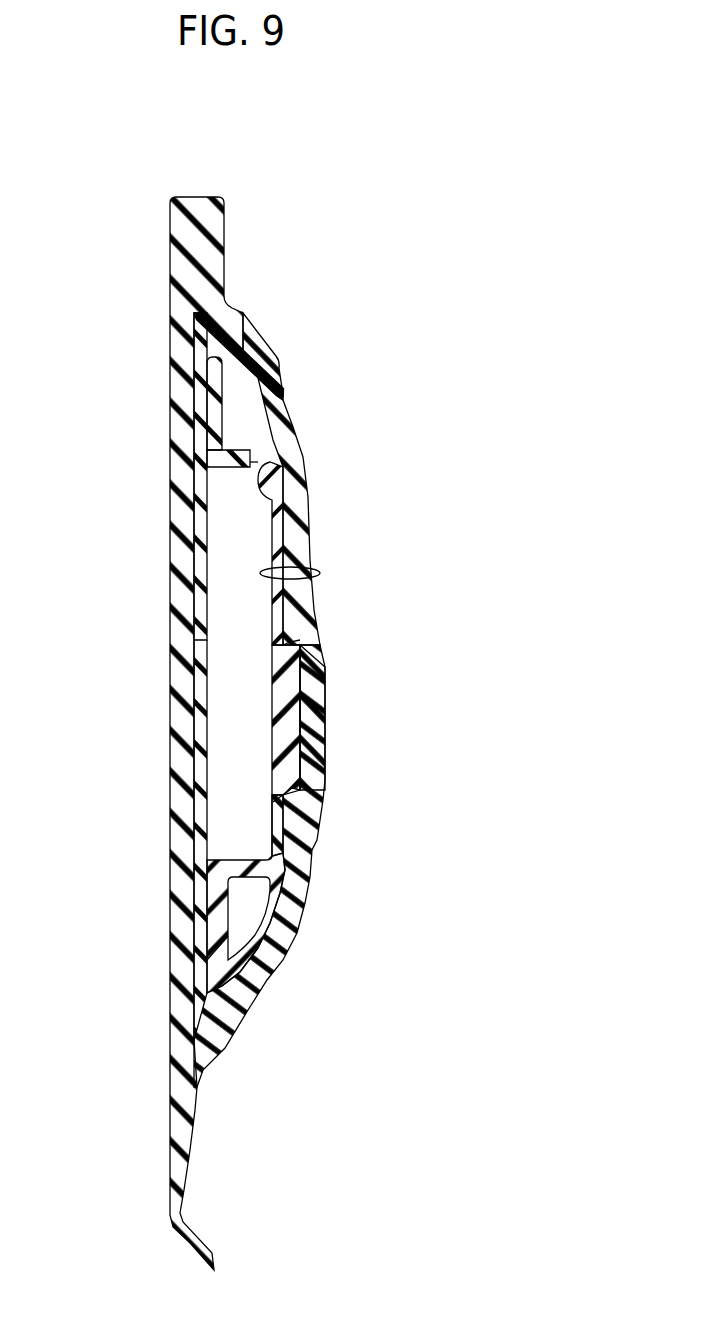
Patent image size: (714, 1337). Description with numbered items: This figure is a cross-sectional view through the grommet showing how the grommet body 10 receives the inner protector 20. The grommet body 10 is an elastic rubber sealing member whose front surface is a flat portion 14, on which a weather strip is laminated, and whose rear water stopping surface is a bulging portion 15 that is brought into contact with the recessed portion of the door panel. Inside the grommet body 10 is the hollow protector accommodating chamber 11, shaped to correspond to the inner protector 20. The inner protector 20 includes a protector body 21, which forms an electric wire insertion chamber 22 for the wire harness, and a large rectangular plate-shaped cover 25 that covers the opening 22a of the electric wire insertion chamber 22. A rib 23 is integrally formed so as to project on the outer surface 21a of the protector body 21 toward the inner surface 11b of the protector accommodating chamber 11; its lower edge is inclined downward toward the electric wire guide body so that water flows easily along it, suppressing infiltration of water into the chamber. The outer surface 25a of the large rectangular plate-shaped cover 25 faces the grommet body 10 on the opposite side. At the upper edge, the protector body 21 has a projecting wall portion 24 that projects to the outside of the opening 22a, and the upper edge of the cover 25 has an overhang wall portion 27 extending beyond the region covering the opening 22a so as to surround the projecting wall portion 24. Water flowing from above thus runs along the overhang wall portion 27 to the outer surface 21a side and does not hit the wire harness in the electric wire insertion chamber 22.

The grommet body 10 is at (232, 268).
The protector accommodating chamber 11 is at (200, 1017).
The inner surface of the protector accommodating chamber 11b is at (320, 573).
The flat portion 14 is at (170, 657).
The bulging portion 15 is at (309, 512).
The inner protector 20 is at (351, 661).
The protector body 21 is at (305, 625).
The outer surface of the protector body 21a is at (305, 801).
The electric wire insertion chamber 22 is at (206, 576).
The opening of the electric wire insertion chamber 22a is at (224, 482).
The rib 23 is at (307, 694).
The projecting wall portion 24 is at (218, 428).
The large rectangular plate-shaped cover 25 is at (204, 700).
The outer surface of the large rectangular plate-shaped cover 25a is at (204, 779).
The overhang wall portion 27 is at (248, 391).